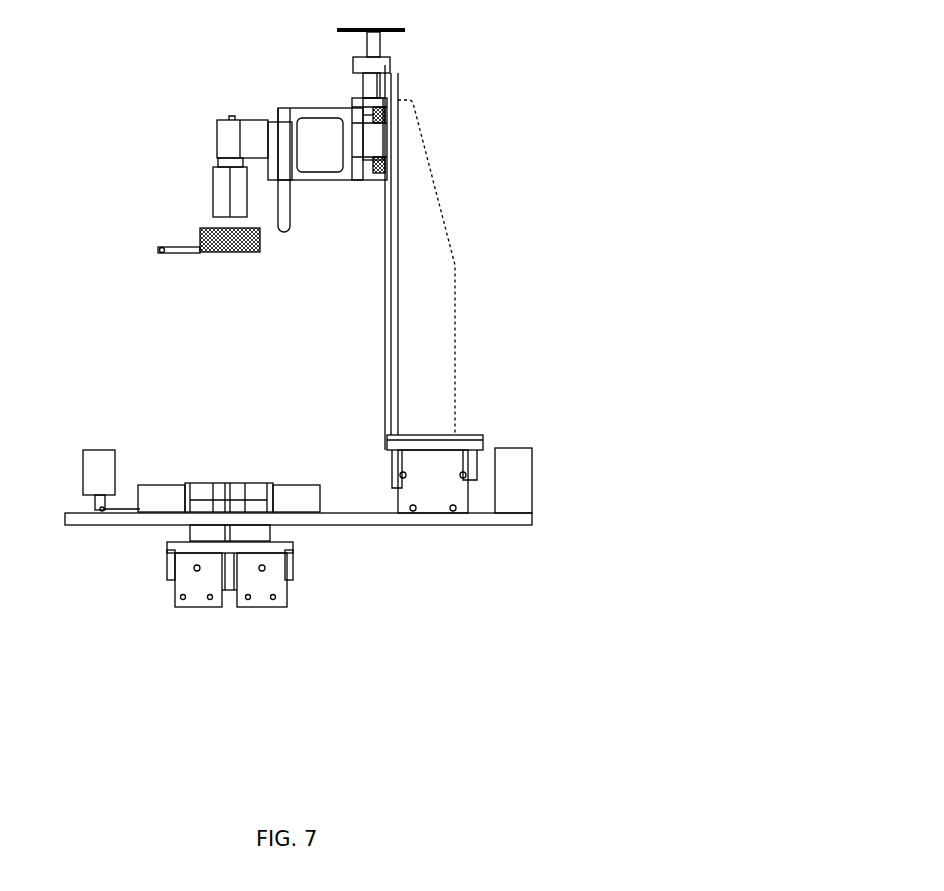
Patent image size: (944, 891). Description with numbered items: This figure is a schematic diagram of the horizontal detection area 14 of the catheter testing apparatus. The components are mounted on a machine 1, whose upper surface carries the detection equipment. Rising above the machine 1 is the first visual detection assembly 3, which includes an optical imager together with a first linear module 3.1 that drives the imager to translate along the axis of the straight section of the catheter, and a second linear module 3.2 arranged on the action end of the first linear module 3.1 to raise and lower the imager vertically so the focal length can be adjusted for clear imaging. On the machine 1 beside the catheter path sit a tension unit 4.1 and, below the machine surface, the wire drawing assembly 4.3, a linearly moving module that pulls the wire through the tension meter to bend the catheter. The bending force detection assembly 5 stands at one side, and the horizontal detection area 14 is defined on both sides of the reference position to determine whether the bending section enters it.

The machine 1 is at (371, 527).
The first visual detection assembly 3 is at (226, 190).
The first linear module 3.1 is at (442, 463).
The second linear module 3.2 is at (365, 140).
The tension unit 4.1 is at (207, 502).
The wire drawing assembly 4.3 is at (198, 585).
The bending force detection assembly 5 is at (92, 468).
The horizontal detection area 14 is at (162, 502).